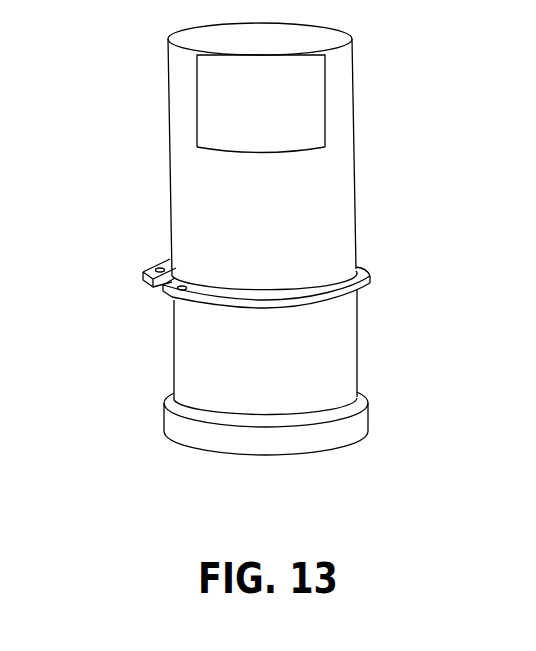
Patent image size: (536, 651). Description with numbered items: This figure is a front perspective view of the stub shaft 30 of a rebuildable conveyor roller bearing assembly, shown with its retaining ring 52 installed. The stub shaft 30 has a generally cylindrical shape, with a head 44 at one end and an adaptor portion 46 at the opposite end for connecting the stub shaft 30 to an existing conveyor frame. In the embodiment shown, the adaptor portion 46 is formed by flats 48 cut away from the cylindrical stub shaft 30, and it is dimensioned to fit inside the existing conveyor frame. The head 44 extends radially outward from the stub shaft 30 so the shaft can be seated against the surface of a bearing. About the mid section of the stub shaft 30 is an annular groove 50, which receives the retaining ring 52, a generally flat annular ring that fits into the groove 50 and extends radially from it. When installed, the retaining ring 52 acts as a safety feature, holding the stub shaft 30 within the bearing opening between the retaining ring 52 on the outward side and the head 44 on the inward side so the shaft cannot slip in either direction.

The stub shaft 30 is at (295, 235).
The head 44 is at (327, 438).
The adaptor portion 46 is at (272, 42).
The flats 48 is at (253, 117).
The annular groove 50 is at (370, 285).
The retaining ring 52 is at (197, 302).